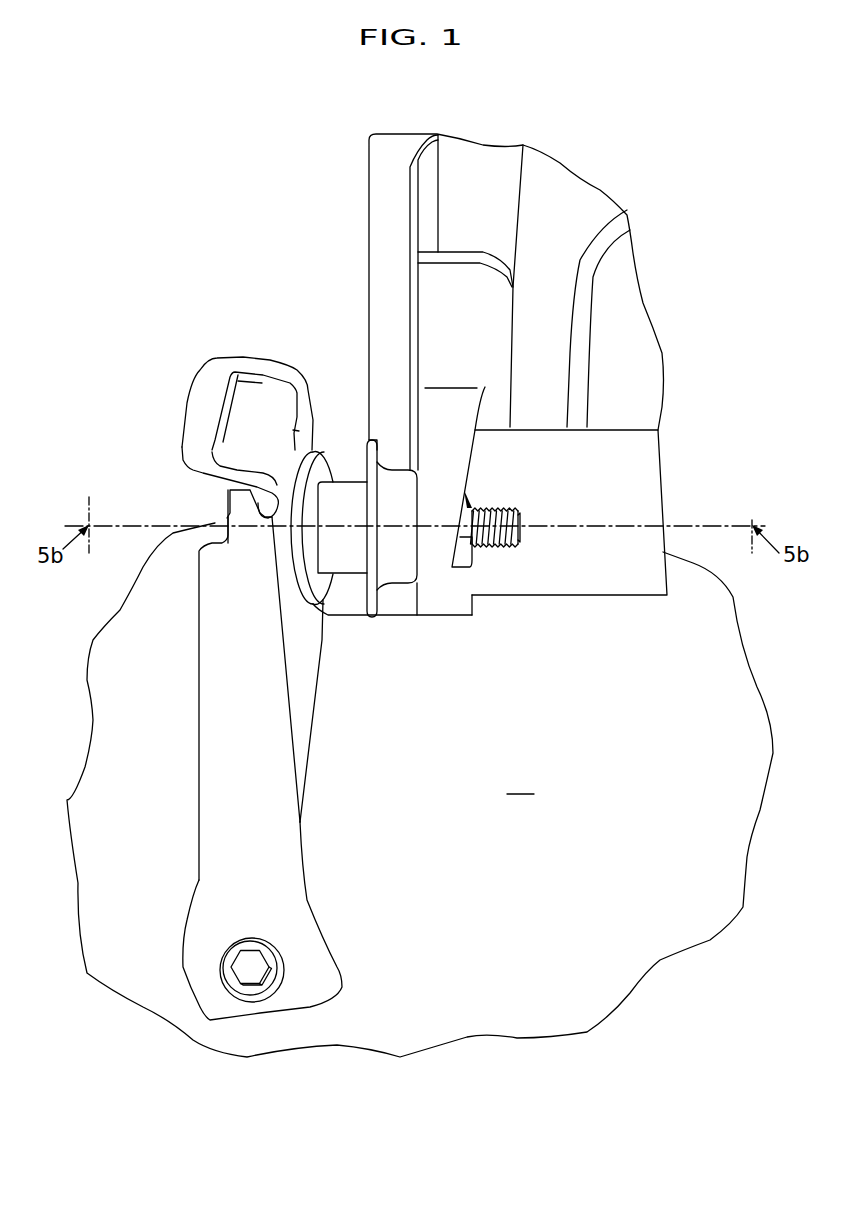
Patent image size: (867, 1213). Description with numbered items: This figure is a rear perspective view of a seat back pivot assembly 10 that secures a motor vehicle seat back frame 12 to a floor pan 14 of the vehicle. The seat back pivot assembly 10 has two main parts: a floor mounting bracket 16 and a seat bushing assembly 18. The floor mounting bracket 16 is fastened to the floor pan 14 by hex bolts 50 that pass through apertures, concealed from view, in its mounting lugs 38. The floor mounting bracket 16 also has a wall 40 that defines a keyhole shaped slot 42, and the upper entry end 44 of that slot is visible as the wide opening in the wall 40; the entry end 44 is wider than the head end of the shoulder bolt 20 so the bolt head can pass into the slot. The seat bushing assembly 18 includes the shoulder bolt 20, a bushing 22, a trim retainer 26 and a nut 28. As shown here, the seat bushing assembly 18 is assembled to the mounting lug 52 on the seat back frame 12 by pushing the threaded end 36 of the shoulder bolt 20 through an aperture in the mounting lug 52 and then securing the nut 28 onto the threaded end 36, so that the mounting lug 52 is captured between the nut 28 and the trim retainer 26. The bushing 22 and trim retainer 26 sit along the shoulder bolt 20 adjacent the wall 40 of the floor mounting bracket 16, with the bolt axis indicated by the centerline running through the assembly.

The seat back pivot assembly 10 is at (147, 345).
The seat back frame 12 is at (563, 220).
The floor pan 14 is at (420, 790).
The floor mounting bracket 16 is at (257, 840).
The seat bushing assembly 18 is at (353, 420).
The shoulder bolt 20 is at (526, 540).
The bushing 22 is at (340, 543).
The trim retainer 26 is at (397, 553).
The nut 28 is at (467, 508).
The threaded end 36 is at (520, 525).
The mounting lugs 38 is at (302, 995).
The wall 40 is at (200, 470).
The keyhole shaped slot 42 is at (250, 350).
The entry end 44 is at (257, 407).
The hex bolts 50 is at (243, 972).
The mounting lug 52 is at (437, 540).